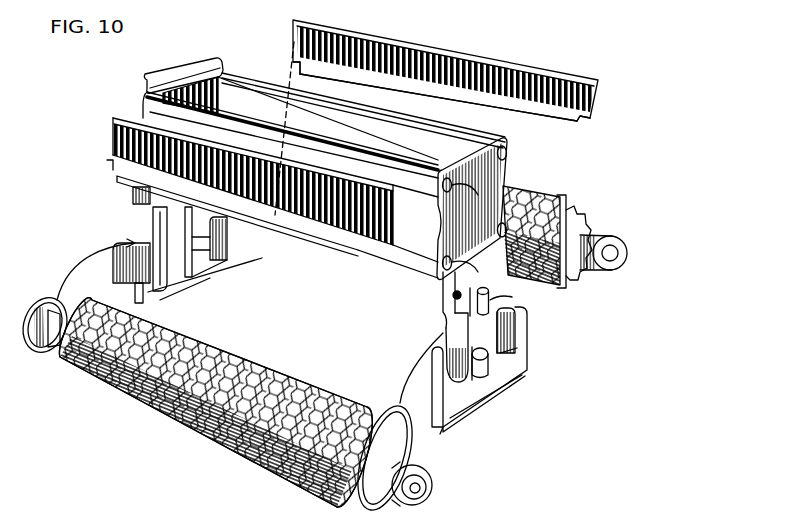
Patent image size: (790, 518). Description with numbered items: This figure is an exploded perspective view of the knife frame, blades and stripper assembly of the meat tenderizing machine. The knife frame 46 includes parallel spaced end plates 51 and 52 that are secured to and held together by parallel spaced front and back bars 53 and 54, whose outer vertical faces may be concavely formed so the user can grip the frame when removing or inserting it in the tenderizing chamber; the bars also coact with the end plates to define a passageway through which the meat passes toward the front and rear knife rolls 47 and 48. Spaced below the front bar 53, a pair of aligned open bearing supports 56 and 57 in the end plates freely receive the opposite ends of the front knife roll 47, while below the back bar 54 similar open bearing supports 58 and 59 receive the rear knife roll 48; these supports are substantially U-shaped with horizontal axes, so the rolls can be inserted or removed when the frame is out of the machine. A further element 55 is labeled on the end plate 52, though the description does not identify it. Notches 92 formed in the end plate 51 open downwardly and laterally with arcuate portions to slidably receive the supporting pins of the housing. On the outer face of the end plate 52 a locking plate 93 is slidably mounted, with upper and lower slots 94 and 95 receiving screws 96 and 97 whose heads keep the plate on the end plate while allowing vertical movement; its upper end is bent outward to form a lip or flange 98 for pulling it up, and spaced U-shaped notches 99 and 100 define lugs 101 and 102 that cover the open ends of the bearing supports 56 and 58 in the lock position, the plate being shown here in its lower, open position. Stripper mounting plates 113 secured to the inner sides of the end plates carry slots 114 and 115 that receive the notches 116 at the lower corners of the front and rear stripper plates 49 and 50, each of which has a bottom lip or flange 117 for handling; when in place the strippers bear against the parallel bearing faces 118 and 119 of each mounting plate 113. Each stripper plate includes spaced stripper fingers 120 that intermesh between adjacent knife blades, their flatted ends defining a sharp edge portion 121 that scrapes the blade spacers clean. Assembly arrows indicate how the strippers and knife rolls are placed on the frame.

The knife frame 46 is at (458, 133).
The front knife roll 47 is at (150, 432).
The rear knife roll 48 is at (563, 197).
The front stripper plate 49 is at (360, 262).
The rear stripper plate 50 is at (564, 133).
The end plate 51 is at (176, 68).
The end plate 52 is at (508, 178).
The front bar 53 is at (230, 122).
The back bar 54 is at (262, 88).
The bolt 55 is at (485, 185).
The open bearing support 56 is at (470, 385).
The open bearing support 57 is at (158, 228).
The open bearing support 58 is at (500, 312).
The open bearing support 59 is at (240, 232).
The notch 92 is at (112, 287).
The locking plate 93 is at (510, 368).
The upper slot 94 is at (477, 310).
The lower slot 95 is at (481, 366).
The screw 96 is at (478, 303).
The screw 97 is at (453, 342).
The lip or flange 98 is at (445, 285).
The U-shaped notch 99 is at (451, 392).
The U-shaped notch 100 is at (518, 349).
The lug 101 is at (441, 368).
The lug 102 is at (525, 331).
The stripper mounting plate 113 is at (177, 287).
The slot 114 is at (150, 292).
The slot 115 is at (203, 277).
The notch 116 is at (292, 70).
The lip or flange 117 is at (290, 242).
The bearing face 118 is at (197, 290).
The bearing face 119 is at (228, 250).
The stripper finger 120 is at (403, 40).
The sharp edge portion 121 is at (519, 68).